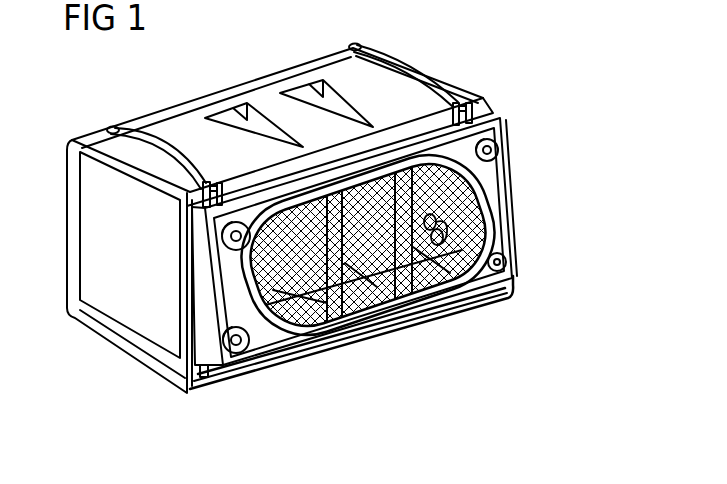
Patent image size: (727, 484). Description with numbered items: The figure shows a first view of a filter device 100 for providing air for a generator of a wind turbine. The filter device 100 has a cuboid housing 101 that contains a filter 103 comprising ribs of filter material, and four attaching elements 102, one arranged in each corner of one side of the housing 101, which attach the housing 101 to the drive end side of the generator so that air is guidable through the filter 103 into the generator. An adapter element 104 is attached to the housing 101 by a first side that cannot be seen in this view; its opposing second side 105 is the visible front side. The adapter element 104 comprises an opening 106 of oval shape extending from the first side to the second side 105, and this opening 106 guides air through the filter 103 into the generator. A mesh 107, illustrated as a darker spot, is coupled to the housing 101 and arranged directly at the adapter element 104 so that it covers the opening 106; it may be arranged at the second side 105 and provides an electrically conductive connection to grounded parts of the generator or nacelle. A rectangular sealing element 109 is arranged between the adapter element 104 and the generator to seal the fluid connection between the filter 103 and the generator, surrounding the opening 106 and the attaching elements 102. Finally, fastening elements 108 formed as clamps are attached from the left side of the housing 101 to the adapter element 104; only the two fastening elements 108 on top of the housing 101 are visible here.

The filter device 100 is at (558, 87).
The housing 101 is at (110, 306).
The attaching element 102 is at (498, 151).
The filter 103 is at (420, 320).
The adapter element 104 is at (515, 210).
The second side 105 is at (482, 185).
The opening 106 is at (352, 328).
The mesh 107 is at (446, 229).
The fastening element 108 is at (170, 142).
The sealing element 109 is at (220, 295).